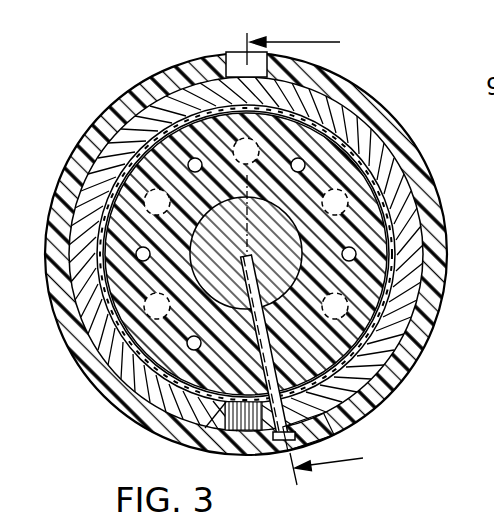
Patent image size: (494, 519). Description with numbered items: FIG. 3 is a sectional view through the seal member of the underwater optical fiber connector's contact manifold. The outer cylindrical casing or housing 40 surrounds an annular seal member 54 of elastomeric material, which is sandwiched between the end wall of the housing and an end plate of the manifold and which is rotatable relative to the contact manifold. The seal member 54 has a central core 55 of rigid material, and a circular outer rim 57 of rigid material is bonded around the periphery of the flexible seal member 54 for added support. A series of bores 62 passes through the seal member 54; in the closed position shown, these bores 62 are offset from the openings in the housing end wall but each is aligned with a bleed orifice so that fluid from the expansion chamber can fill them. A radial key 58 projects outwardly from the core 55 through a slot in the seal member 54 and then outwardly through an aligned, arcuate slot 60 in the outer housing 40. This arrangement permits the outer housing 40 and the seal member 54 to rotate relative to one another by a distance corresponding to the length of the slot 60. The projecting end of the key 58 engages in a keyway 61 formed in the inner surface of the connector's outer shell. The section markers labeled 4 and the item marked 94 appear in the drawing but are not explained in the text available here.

The outer housing ring 40 is at (398, 140).
The liner ring 57 is at (373, 174).
The hatched disc body 54 is at (362, 281).
The holes 62 is at (201, 343).
The central shaft 55 is at (240, 212).
The pin rod 58 is at (272, 350).
The bottom insert 60 is at (237, 432).
The plug 61 is at (343, 422).
The slot 94 is at (232, 53).
The section line 4- 4 is at (317, 259).